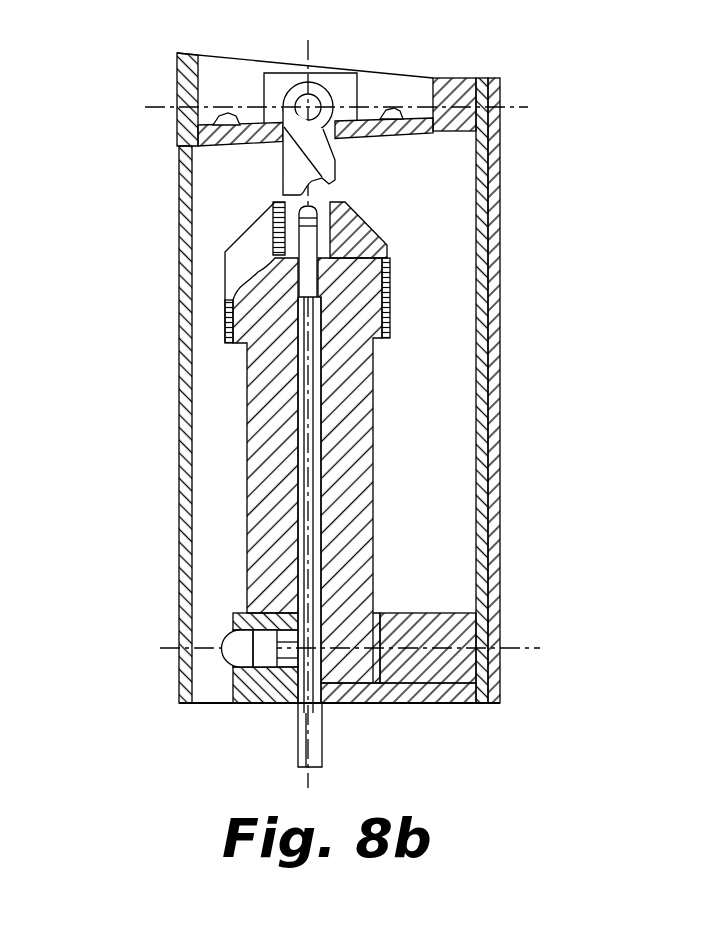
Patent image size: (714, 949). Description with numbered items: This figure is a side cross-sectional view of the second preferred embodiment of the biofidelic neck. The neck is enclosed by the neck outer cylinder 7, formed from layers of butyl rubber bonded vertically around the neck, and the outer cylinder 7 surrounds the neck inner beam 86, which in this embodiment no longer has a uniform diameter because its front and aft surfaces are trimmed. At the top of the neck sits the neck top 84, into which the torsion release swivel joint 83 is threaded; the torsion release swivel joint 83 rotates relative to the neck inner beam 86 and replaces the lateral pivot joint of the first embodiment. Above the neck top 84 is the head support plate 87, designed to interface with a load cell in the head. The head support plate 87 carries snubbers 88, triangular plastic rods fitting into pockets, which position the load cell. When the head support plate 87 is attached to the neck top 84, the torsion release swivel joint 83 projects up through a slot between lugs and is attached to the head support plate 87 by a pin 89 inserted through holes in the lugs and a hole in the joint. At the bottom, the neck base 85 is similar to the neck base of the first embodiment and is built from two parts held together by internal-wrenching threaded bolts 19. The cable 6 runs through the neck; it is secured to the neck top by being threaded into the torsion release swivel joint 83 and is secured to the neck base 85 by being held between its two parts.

The cable 6 is at (295, 737).
The neck outer cylinder 7 is at (500, 211).
The internal-wrenching threaded bolts 19 is at (223, 661).
The torsion release swivel joint 83 is at (296, 160).
The neck top 84 is at (360, 209).
The neck base 85 is at (392, 707).
The neck inner beam 86 is at (375, 415).
The head support plate 87 is at (462, 78).
The snubbers 88 is at (228, 104).
The pin 89 is at (313, 100).